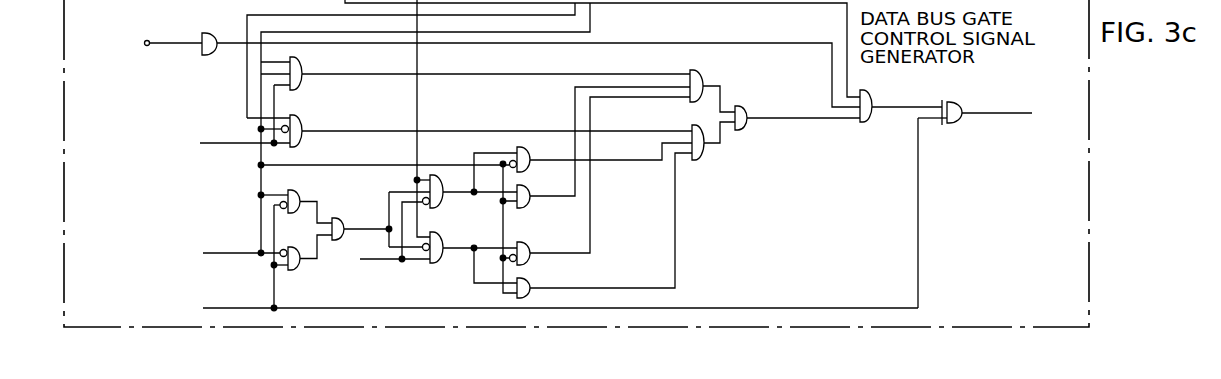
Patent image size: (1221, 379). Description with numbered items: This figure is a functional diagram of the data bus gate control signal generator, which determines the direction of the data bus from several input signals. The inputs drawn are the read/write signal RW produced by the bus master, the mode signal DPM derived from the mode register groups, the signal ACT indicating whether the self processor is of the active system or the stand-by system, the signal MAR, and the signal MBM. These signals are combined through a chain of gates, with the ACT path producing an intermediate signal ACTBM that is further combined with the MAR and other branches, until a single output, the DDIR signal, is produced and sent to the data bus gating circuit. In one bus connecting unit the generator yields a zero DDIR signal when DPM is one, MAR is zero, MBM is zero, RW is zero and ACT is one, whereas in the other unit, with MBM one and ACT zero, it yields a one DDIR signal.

The read/write signal RW is at (464, 67).
The mode signal DPM is at (446, 131).
The active system information signal ACT is at (251, 249).
The ACTBM signal ACTBM is at (365, 225).
The MAR signal MAR is at (396, 219).
The DDIR signal DDIR is at (975, 109).
The MBM signal MBM is at (560, 214).